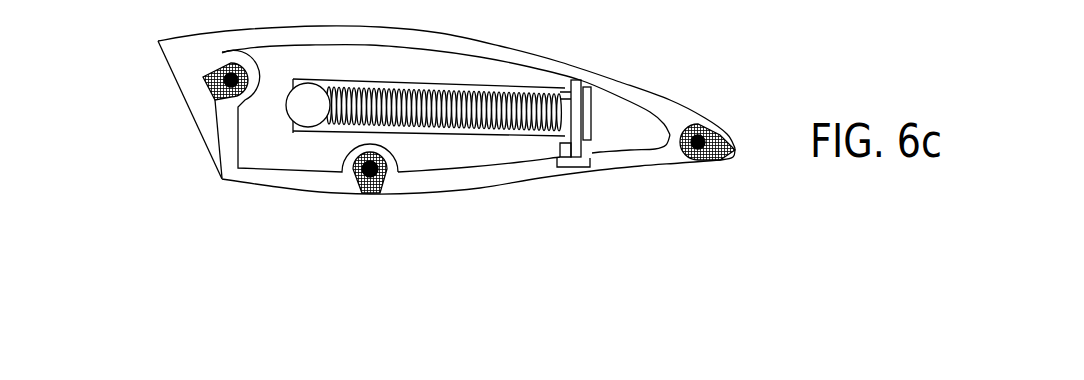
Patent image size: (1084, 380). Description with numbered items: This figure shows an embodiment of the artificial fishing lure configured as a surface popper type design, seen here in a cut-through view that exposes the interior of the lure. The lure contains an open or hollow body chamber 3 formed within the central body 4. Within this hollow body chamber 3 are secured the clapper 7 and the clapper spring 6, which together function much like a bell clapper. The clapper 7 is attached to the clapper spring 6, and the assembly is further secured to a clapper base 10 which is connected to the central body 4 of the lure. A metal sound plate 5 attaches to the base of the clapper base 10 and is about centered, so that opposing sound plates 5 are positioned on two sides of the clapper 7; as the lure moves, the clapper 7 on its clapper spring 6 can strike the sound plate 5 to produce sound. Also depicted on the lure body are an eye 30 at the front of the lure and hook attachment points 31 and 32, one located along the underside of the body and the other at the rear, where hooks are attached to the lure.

The hollow body chamber 3 is at (252, 140).
The central body 4 is at (575, 167).
The metal sound plate 5 is at (468, 138).
The clapper spring 6 is at (420, 120).
The clapper 7 is at (303, 118).
The clapper base 10 is at (578, 128).
The eye 30 is at (215, 77).
The hook attachment point 31 is at (368, 178).
The hook attachment point 32 is at (700, 152).